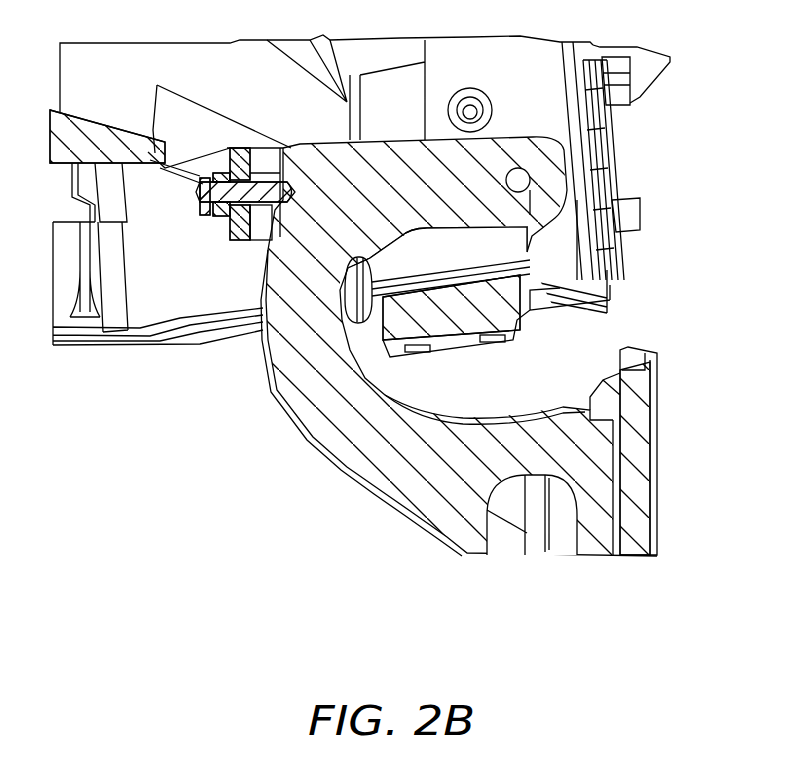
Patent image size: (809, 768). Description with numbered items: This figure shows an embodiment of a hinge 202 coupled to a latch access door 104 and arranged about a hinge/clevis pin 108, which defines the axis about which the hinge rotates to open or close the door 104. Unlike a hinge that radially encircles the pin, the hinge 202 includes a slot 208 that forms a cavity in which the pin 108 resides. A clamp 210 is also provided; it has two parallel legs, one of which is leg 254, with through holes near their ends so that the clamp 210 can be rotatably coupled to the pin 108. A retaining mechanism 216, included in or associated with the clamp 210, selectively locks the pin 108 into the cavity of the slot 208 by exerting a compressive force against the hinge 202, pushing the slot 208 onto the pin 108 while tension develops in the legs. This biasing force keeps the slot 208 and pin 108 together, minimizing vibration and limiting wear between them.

The latch access door 104 is at (652, 455).
The hinge/clevis pin 108 is at (546, 176).
The hinge 202 is at (383, 473).
The slot 208 is at (516, 180).
The clamp 210 is at (263, 230).
The retaining mechanism 216 is at (197, 200).
The leg 254 is at (287, 165).